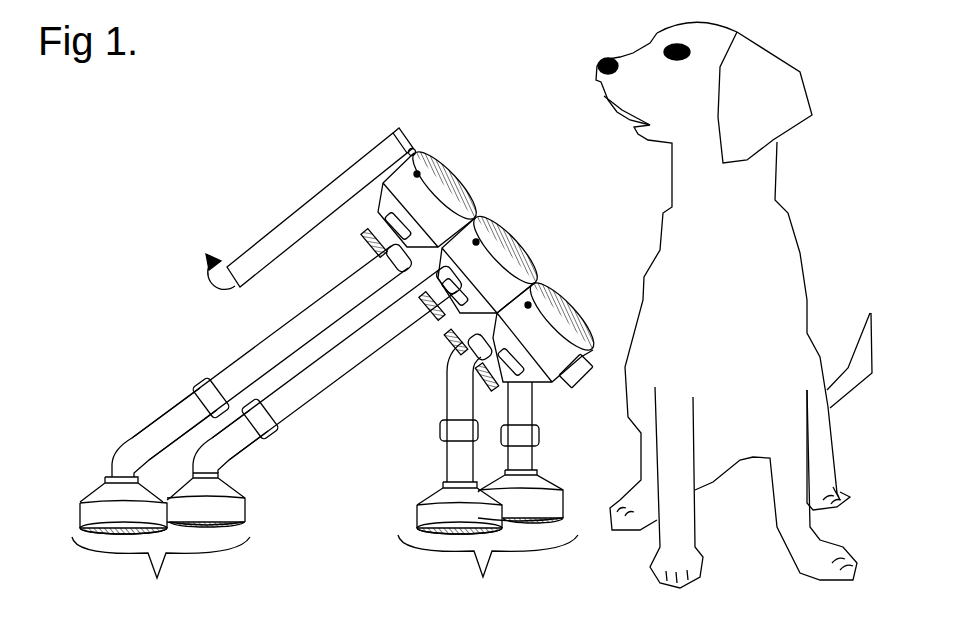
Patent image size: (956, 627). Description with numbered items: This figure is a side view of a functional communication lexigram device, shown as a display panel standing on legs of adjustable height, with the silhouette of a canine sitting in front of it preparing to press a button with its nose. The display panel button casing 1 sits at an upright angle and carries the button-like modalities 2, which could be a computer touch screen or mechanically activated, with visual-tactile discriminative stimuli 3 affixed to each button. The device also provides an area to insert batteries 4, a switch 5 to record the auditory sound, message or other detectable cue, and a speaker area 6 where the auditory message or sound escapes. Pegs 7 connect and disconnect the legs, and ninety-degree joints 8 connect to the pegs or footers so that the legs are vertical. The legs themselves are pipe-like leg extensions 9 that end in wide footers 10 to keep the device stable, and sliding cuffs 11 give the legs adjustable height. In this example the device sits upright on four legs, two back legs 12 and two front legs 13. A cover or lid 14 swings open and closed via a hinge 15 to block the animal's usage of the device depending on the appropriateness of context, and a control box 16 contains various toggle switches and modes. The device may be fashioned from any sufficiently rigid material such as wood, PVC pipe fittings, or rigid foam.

The display panel button casing 1 is at (541, 370).
The button-like modalities 2 is at (441, 152).
The visual-tactile discriminative stimuli 3 is at (464, 170).
The battery insertion area 4 is at (516, 370).
The recording switch 5 is at (410, 149).
The speaker area 6 is at (362, 266).
The pegs 7 is at (394, 258).
The 90-degree joints 8 is at (113, 450).
The pipe-like leg extensions 9 is at (157, 412).
The wide footers 10 is at (85, 492).
The sliding cuffs 11 is at (198, 382).
The back legs 12 is at (161, 571).
The front legs 13 is at (488, 570).
The cover or lid 14 is at (297, 202).
The hinge 15 is at (410, 140).
The control box 16 is at (578, 384).